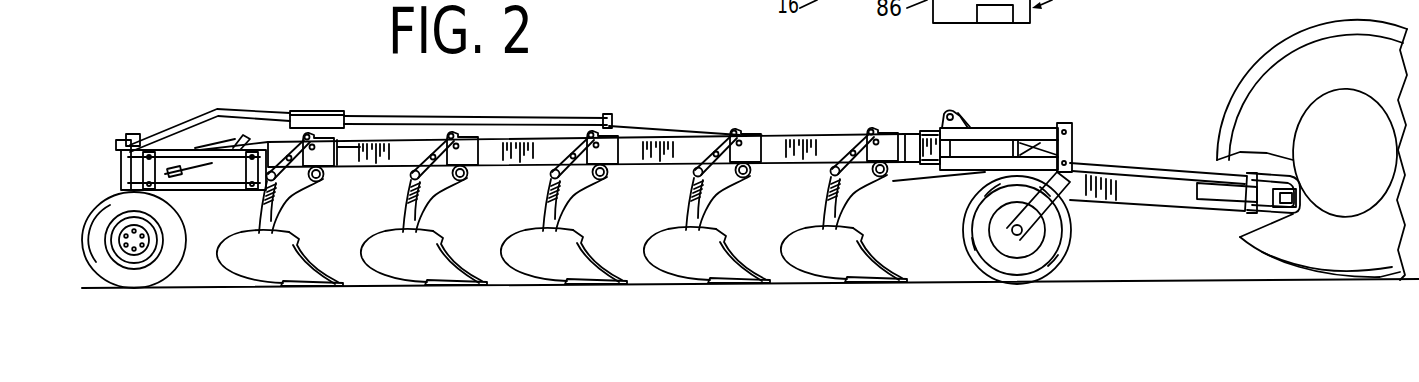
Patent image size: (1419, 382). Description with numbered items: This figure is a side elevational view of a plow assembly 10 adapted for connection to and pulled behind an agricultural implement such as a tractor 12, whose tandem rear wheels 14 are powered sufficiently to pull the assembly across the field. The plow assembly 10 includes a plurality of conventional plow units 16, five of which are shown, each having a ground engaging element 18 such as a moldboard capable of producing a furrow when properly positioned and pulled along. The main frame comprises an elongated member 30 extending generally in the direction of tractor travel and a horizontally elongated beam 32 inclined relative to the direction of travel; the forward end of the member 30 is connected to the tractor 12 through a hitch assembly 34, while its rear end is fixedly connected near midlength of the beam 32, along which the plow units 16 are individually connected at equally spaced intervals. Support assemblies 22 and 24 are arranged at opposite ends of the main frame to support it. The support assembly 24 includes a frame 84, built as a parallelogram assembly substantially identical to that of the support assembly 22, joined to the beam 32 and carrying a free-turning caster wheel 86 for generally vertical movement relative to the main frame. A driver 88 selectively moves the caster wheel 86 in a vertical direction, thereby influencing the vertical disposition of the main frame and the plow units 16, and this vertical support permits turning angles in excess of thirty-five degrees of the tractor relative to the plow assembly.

The plow assembly 10 is at (845, 95).
The tractor 12 is at (1238, 59).
The tandem rear wheels 14 is at (1250, 102).
The plow units 16 is at (253, 281).
The ground engaging element 18 is at (261, 254).
The support assembly 22 is at (93, 196).
The support assembly 24 is at (1010, 118).
The elongated member 30 is at (1143, 192).
The beam 32 is at (507, 160).
The hitch assembly 34 is at (1281, 166).
The frame 84 is at (963, 178).
The caster wheel 86 is at (1072, 259).
The driver 88 is at (972, 121).